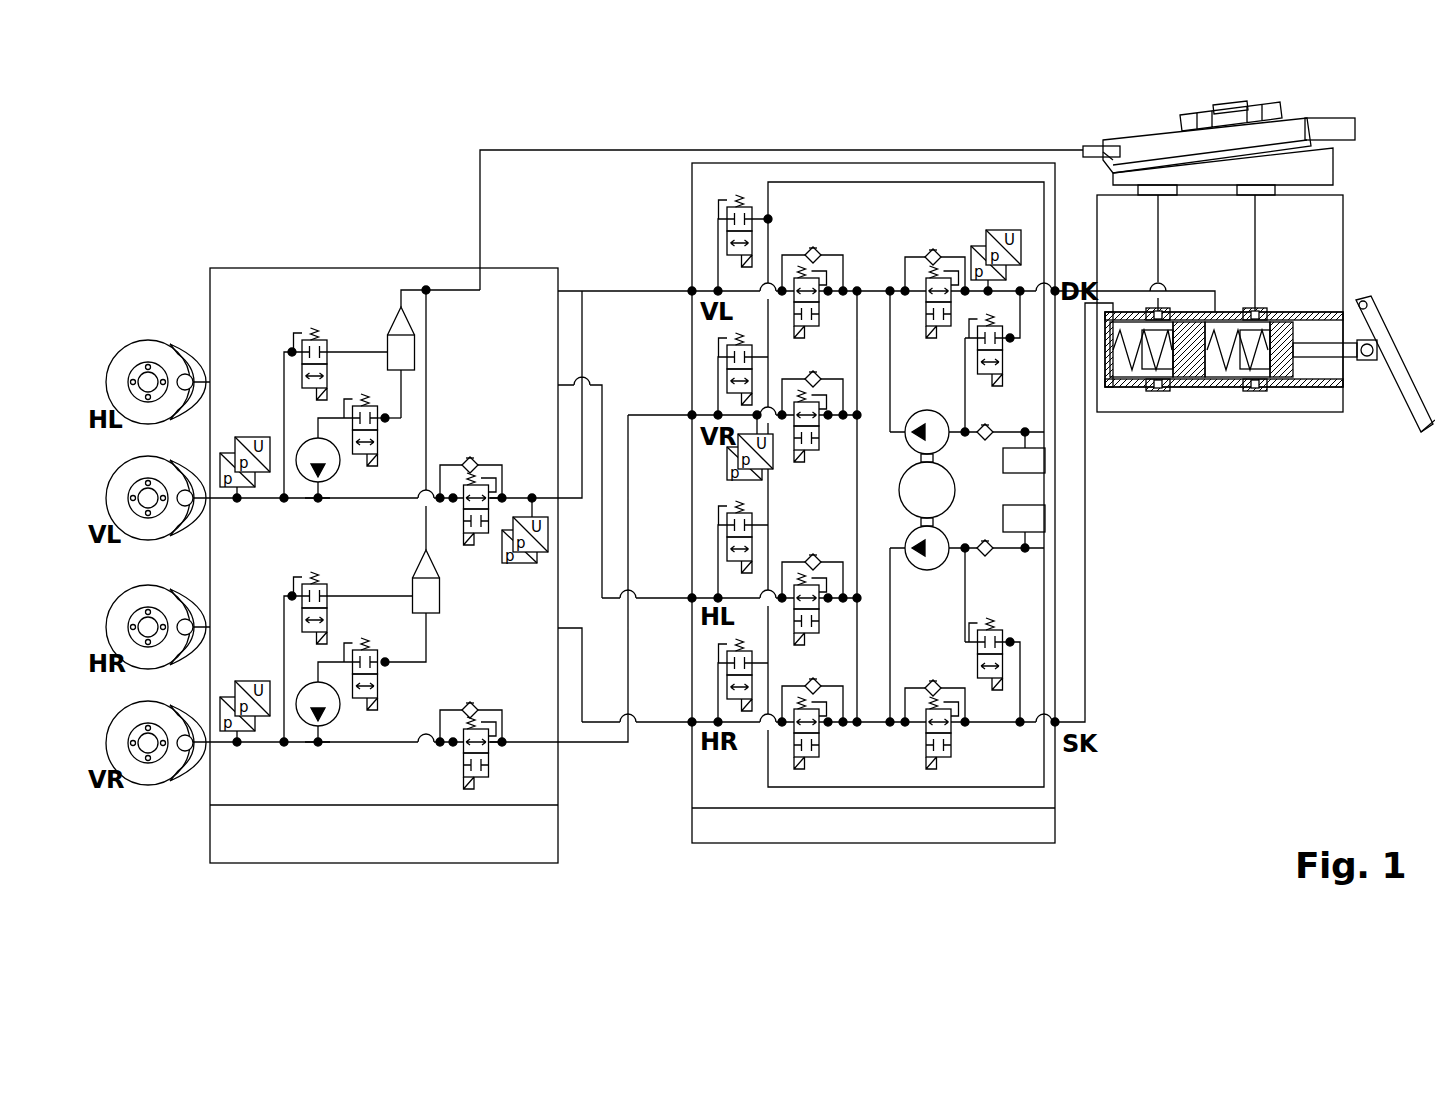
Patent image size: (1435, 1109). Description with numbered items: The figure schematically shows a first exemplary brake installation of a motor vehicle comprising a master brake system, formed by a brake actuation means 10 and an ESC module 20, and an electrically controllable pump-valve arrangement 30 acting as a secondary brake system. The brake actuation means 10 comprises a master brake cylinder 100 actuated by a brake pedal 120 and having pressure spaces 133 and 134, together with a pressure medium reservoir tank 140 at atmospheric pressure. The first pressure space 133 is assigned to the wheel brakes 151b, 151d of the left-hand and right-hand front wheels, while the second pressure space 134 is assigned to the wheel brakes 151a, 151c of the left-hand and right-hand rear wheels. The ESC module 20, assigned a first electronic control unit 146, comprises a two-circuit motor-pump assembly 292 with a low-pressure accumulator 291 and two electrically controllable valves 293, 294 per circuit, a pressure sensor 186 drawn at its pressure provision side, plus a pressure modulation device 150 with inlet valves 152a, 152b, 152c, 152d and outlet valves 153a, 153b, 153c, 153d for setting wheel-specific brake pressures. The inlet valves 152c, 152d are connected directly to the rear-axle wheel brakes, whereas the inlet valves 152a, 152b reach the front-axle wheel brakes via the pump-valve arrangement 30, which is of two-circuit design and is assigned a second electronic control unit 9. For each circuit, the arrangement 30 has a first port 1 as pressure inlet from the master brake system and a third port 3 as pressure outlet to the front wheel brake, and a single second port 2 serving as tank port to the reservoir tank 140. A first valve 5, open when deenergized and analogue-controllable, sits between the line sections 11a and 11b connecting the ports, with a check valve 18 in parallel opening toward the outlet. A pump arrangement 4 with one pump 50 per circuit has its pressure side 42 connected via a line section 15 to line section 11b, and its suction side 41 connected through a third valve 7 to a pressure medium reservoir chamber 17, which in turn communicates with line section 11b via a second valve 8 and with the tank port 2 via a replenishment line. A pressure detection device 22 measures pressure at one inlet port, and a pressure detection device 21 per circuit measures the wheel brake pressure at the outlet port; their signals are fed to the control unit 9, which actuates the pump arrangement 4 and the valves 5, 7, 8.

The first port 1 is at (566, 512).
The second port 2 is at (476, 262).
The third port 3 is at (205, 508).
The pump arrangement 4 is at (322, 506).
The first valve 5 is at (480, 540).
The third valve 7 is at (380, 443).
The second valve 8 is at (328, 348).
The second electronic open-loop and closed-loop control unit 9 is at (484, 848).
The brake actuation means 10 is at (1360, 236).
The line section 11a is at (532, 495).
The line section 11b is at (284, 503).
The line section 15 is at (317, 502).
The pressure medium reservoir chamber 17 is at (402, 352).
The check valve 18 is at (472, 458).
The ESC module 20 is at (666, 195).
The pressure detection device 21 is at (253, 436).
The pressure detection device 22 is at (530, 566).
The pump-valve arrangement 30 is at (281, 258).
The suction side 41 is at (306, 446).
The pressure side 42 is at (326, 490).
The pump 50 is at (322, 448).
The master brake cylinder 100 is at (1305, 408).
The brake pedal 120 is at (1392, 380).
The pressure space 133 is at (1230, 392).
The pressure space 134 is at (1130, 392).
The pressure medium reservoir tank 140 is at (1162, 148).
The first electronic open-loop and closed-loop control unit 146 is at (987, 830).
The pressure modulation device 150 is at (797, 213).
The wheel brake 151a is at (180, 356).
The wheel brake 151b is at (180, 473).
The wheel brake 151c is at (180, 601).
The wheel brake 151d is at (180, 719).
The inlet valve 152a is at (826, 310).
The inlet valve 152b is at (826, 432).
The inlet valve 152c is at (826, 620).
The inlet valve 152d is at (832, 745).
The outlet valve 153a is at (726, 236).
The outlet valve 153b is at (726, 375).
The outlet valve 153c is at (726, 545).
The outlet valve 153d is at (726, 683).
The pressure sensor 186 is at (975, 225).
The low-pressure accumulator 291 is at (1045, 461).
The motor-pump assembly 292 is at (896, 507).
The electrically controllable valve 293 is at (924, 326).
The electrically controllable valve 294 is at (1006, 366).